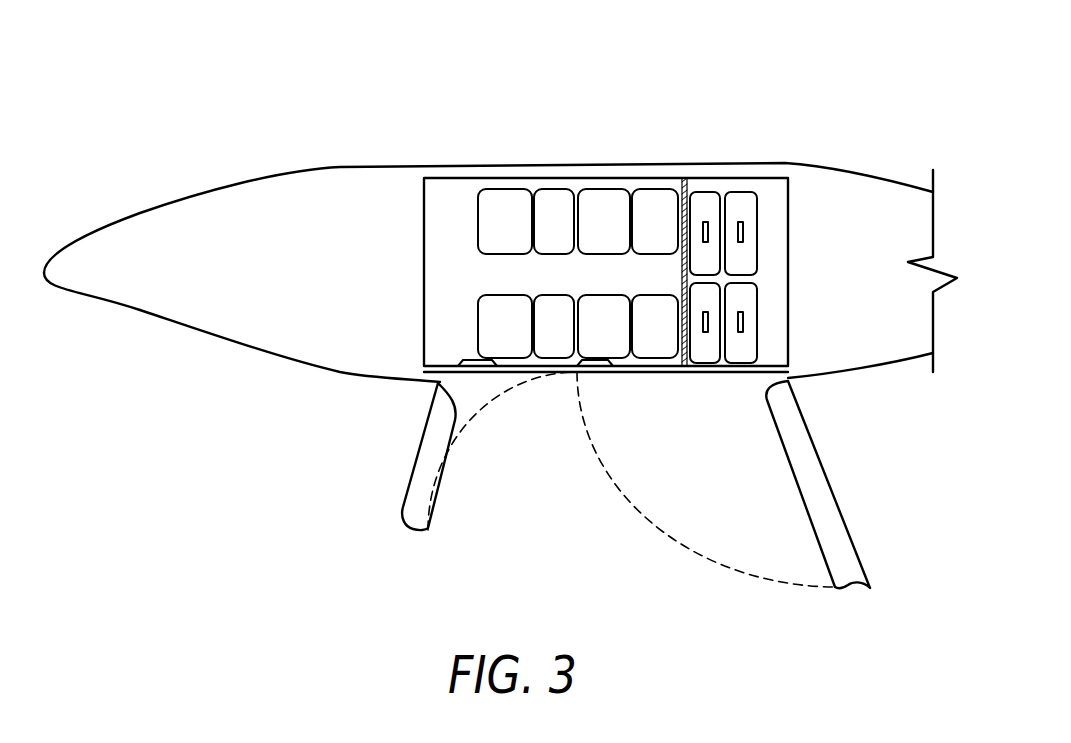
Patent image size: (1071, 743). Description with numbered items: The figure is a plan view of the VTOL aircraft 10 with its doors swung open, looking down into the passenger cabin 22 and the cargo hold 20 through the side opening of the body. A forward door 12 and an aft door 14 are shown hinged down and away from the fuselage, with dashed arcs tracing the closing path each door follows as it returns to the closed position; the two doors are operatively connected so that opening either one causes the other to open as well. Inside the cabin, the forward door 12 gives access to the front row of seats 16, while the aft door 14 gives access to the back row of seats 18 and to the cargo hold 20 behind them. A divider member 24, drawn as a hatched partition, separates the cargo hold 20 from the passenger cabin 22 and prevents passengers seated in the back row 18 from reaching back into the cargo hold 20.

The VTOL aircraft 10 is at (815, 110).
The forward door 12 is at (420, 443).
The aft door 14 is at (843, 512).
The front row of seats 16 is at (512, 148).
The back row of seats 18 is at (612, 148).
The cargo hold 20 is at (767, 192).
The passenger cabin 22 is at (462, 284).
The divider member 24 is at (684, 183).